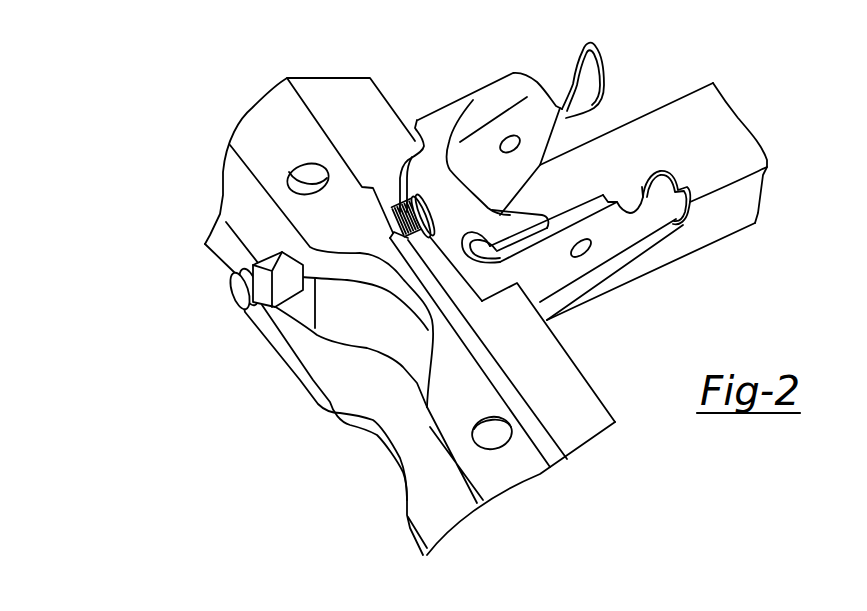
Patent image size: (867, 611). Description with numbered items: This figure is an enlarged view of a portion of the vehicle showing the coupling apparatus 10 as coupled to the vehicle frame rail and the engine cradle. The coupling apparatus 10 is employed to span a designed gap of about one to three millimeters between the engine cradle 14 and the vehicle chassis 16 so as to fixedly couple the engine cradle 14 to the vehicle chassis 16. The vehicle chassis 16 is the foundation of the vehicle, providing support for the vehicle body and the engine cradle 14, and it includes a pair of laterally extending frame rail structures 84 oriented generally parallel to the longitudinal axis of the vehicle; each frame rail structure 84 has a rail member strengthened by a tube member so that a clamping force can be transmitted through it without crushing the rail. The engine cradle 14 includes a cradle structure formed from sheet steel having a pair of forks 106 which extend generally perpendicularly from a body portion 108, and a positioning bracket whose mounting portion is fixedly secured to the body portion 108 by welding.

The coupling apparatus 10 is at (165, 302).
The engine cradle 14 is at (479, 72).
The vehicle chassis 16 is at (575, 482).
The frame rail structure 84 is at (262, 108).
The fork 106 is at (597, 78).
The body portion 108 is at (478, 277).